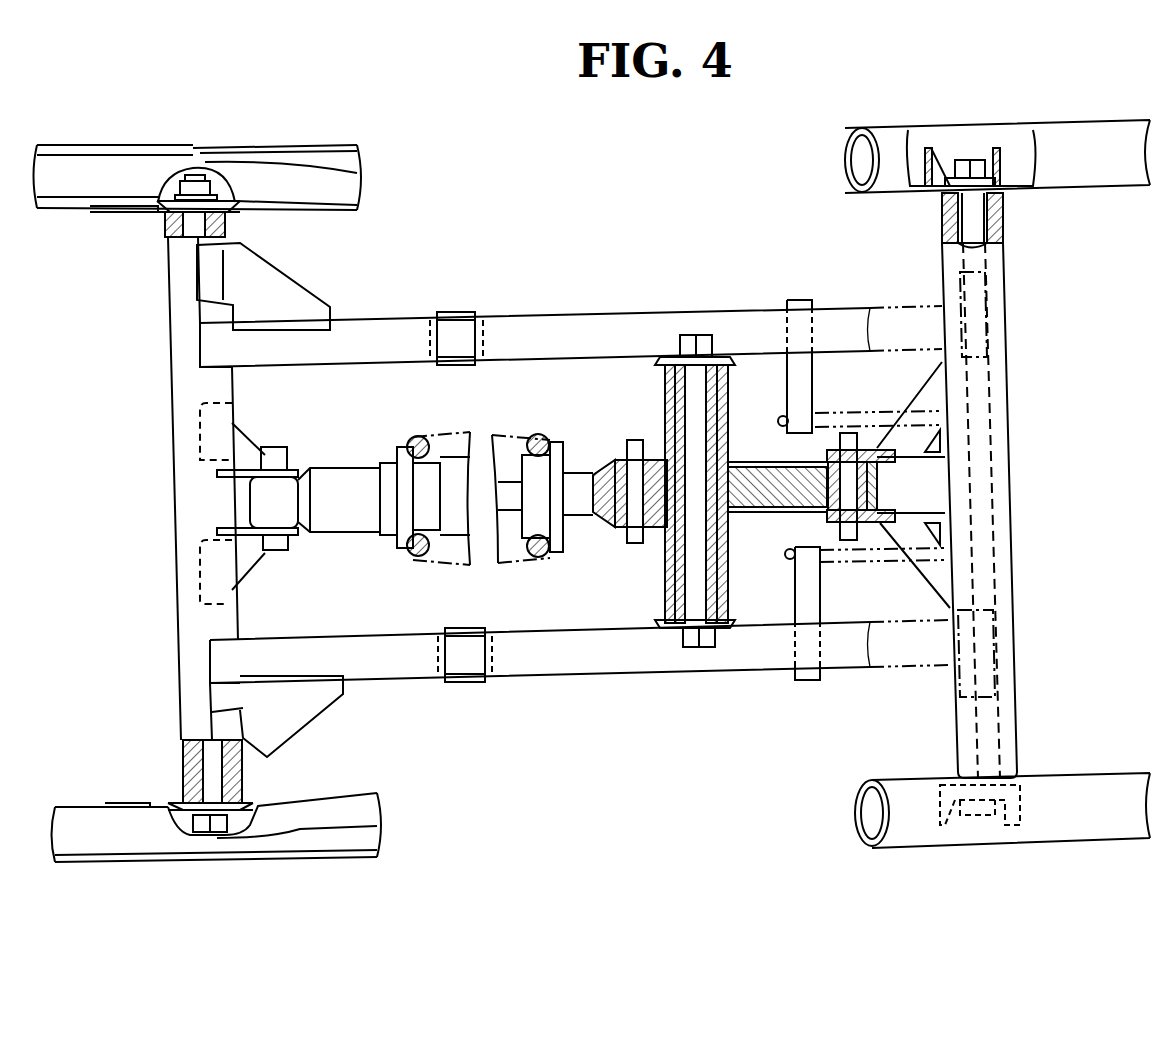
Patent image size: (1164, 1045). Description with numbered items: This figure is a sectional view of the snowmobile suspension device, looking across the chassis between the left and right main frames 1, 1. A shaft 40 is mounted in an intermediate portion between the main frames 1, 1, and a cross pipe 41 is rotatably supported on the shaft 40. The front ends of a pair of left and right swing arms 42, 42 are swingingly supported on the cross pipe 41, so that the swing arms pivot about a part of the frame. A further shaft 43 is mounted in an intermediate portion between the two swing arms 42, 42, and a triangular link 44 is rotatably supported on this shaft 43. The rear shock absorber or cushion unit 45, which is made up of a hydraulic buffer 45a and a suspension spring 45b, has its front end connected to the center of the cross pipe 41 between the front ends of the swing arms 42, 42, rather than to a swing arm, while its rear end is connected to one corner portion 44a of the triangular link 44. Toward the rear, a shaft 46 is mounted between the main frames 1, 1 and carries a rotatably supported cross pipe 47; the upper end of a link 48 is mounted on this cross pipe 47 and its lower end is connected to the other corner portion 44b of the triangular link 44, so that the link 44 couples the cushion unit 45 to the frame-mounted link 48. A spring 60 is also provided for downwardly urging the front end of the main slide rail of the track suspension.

The main frame 1 is at (332, 165).
The shaft 40 is at (170, 238).
The cross pipe 41 is at (178, 398).
The swing arm 42 is at (572, 330).
The shaft 43 is at (695, 362).
The triangular link 44 is at (767, 512).
The corner portion 44a is at (612, 460).
The corner portion 44b is at (850, 540).
The rear shock absorber or cushion unit 45 is at (408, 433).
The hydraulic buffer 45a is at (357, 515).
The suspension spring 45b is at (522, 555).
The shaft 46 is at (975, 228).
The cross pipe 47 is at (1010, 447).
The link 48 is at (935, 518).
The spring 60 is at (803, 418).